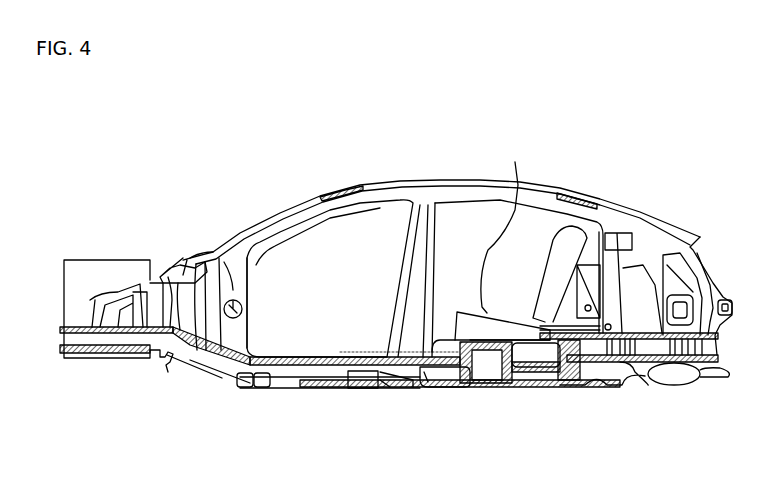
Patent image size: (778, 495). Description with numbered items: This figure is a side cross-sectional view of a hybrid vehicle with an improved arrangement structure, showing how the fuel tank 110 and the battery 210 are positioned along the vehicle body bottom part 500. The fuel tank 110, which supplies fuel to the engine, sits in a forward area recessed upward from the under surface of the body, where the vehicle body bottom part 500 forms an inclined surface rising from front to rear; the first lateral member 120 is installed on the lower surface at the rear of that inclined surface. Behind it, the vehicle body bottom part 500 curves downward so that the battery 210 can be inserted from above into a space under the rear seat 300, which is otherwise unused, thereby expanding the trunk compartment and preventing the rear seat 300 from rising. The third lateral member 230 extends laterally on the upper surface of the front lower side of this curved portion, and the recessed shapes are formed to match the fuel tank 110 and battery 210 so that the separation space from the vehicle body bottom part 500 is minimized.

The fuel tank 110 is at (427, 387).
The first lateral member 120 is at (468, 383).
The battery 210 is at (547, 365).
The third lateral member 230 is at (523, 375).
The rear seat 300 is at (527, 244).
The vehicle body bottom part 500 is at (388, 337).